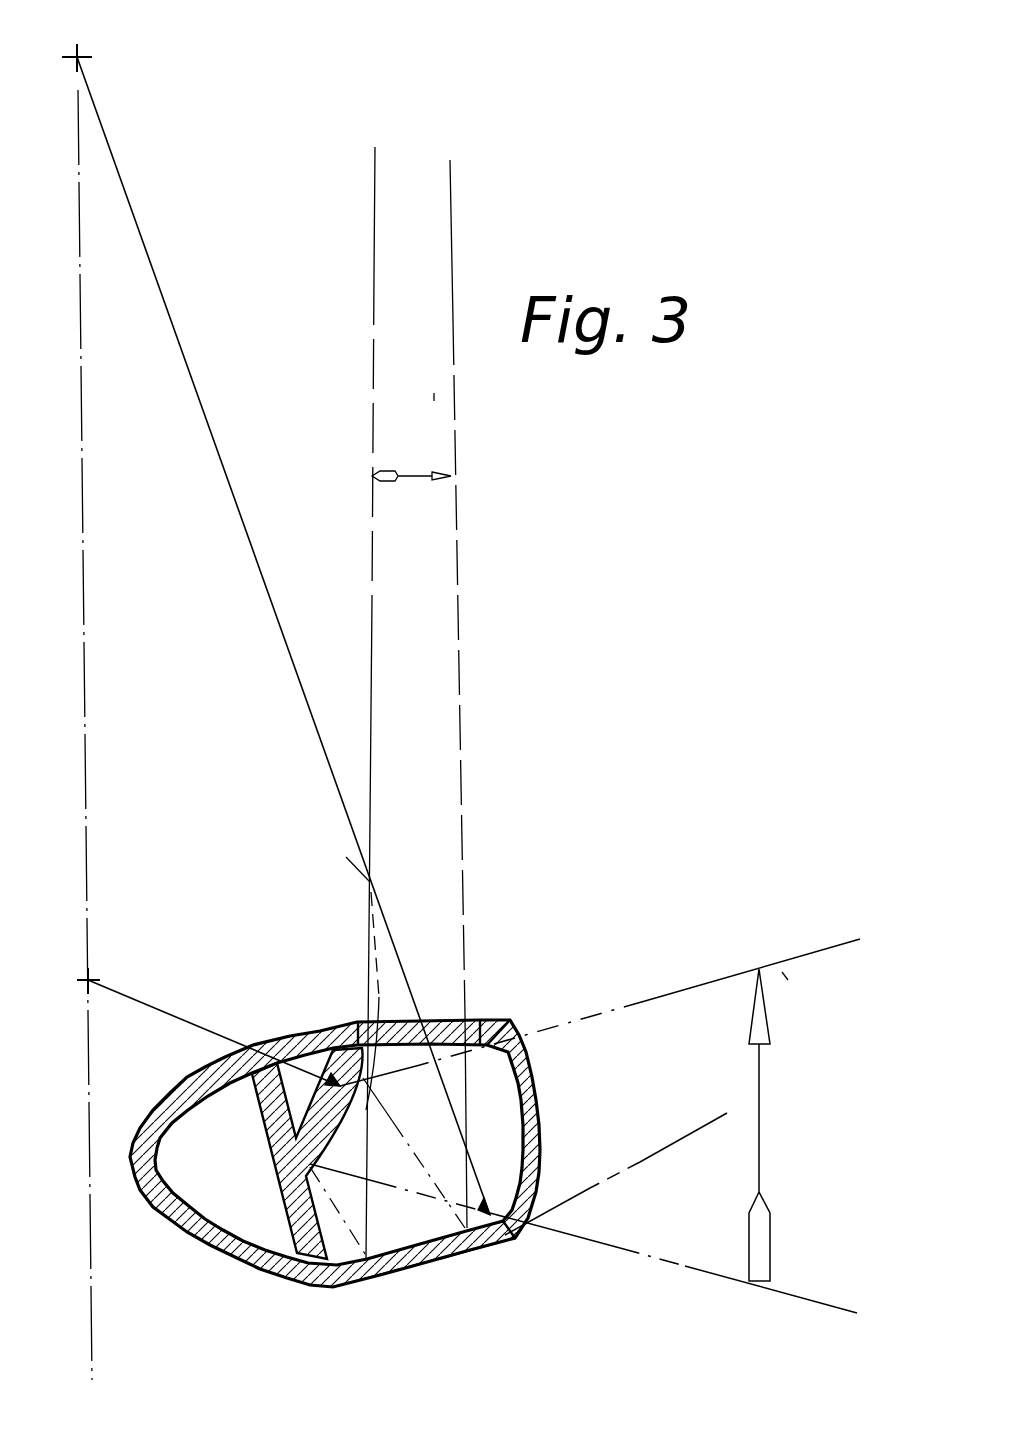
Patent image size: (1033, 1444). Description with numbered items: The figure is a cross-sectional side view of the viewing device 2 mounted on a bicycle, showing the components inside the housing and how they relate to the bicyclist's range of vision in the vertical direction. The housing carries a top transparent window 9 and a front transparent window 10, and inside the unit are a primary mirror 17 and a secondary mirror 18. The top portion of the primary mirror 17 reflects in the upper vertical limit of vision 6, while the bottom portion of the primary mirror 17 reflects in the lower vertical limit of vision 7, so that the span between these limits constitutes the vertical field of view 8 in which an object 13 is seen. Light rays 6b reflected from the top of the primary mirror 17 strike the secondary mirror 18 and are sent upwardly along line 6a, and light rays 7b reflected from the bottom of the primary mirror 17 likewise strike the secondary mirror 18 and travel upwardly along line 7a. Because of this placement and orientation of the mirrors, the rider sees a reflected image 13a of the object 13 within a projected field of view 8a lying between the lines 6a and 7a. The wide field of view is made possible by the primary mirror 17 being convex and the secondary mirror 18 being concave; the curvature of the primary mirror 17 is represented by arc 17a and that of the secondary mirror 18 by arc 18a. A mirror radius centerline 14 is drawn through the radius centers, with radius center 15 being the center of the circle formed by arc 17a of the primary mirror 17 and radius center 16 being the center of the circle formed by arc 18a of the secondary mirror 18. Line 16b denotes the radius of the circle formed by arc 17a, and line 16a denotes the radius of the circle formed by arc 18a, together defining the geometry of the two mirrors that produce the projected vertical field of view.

The viewing device 2 is at (482, 1250).
The upper vertical limit of vision 6 is at (825, 908).
The line of upwardly reflected light rays 6a is at (458, 573).
The light rays 6b is at (402, 1134).
The lower vertical limit of vision 7 is at (813, 1301).
The line of upwardly reflected light rays 7a is at (372, 548).
The light rays 7b is at (352, 1233).
The vertical field of view 8 is at (785, 975).
The projected field of view 8a is at (434, 397).
The top transparent window 9 is at (437, 1025).
The front transparent window 10 is at (540, 1092).
The object 13 is at (766, 1027).
The reflected image 13a is at (421, 472).
The mirror radius centerline 14 is at (82, 440).
The radius center for primary mirror 15 is at (97, 977).
The radius center for secondary mirror 16 is at (88, 50).
The radius of circle formed by arc 18a 16a is at (296, 677).
The radius of circle formed by arc 17a 16b is at (170, 1013).
The primary mirror 17 is at (366, 1110).
The arc 17a is at (361, 895).
The secondary mirror 18 is at (417, 1243).
The arc 18a is at (697, 1130).